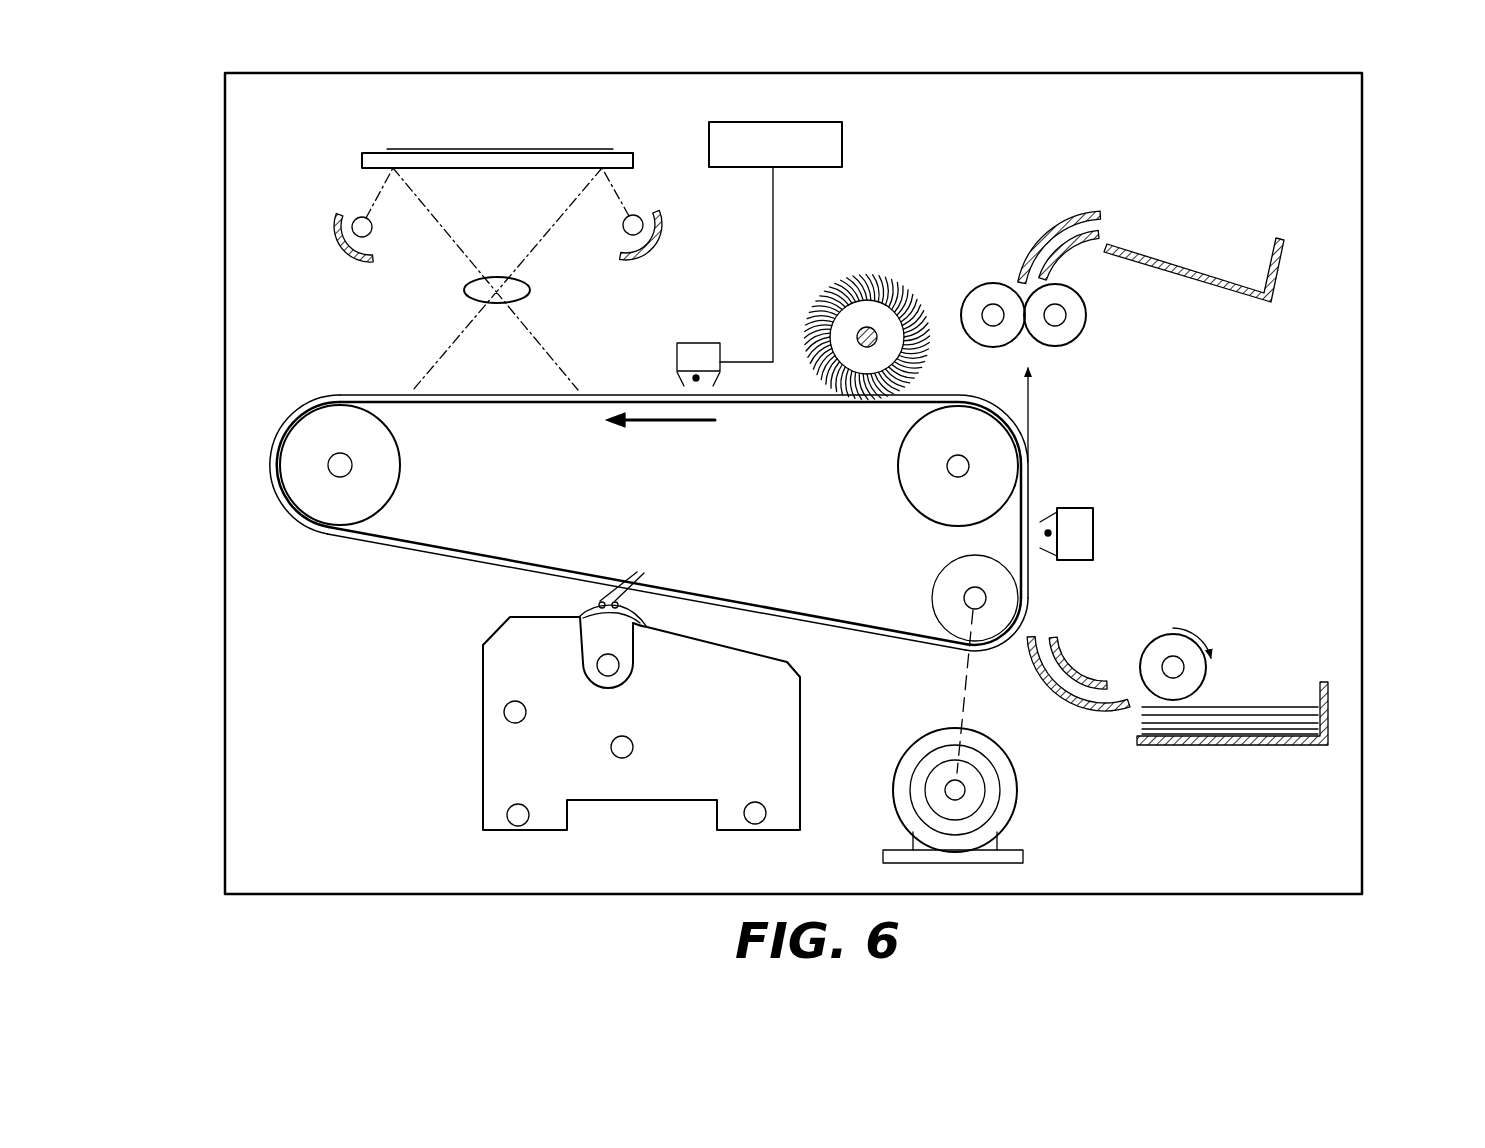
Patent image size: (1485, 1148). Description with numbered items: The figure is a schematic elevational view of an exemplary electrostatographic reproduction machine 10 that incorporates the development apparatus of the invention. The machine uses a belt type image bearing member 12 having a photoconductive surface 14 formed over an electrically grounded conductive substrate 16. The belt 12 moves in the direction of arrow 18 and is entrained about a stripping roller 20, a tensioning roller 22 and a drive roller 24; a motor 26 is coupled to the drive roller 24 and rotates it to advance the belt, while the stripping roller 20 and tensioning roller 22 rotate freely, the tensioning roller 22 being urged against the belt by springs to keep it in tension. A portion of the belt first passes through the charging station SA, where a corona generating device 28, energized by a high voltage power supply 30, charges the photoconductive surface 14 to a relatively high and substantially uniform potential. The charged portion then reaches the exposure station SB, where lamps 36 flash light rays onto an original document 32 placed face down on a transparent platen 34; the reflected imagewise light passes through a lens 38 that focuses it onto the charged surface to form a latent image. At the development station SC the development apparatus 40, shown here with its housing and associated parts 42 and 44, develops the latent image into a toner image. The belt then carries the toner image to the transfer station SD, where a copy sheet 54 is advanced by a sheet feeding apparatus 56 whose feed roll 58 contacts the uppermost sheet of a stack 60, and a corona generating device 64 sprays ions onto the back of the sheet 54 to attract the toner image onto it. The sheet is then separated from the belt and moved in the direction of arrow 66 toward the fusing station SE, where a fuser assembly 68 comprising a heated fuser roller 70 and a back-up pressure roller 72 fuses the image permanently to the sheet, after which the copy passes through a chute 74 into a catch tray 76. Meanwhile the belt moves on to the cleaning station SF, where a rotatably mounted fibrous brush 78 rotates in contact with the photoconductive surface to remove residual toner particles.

The electrostatographic reproduction machine 10 is at (1368, 486).
The belt type image bearing member 12 is at (832, 420).
The photoconductive surface 14 is at (890, 637).
The electrically grounded conductive substrate 16 is at (562, 566).
The arrow 18 is at (697, 428).
The stripping roller 20 is at (923, 486).
The tensioning roller 22 is at (385, 465).
The drive roller 24 is at (952, 596).
The motor 26 is at (1040, 790).
The corona generating device 28 is at (706, 334).
The high voltage power supply 30 is at (813, 123).
The original document 32 is at (548, 151).
The transparent platen 34 is at (503, 170).
The lamps 36 is at (362, 217).
The lens 38 is at (510, 283).
The development apparatus 40 is at (476, 767).
The developer unit opening 42 is at (603, 617).
The developer blade / wire 44 is at (640, 572).
The copy sheet 54 is at (1031, 491).
The sheet feeding apparatus 56 is at (1115, 671).
The feed roll 58 is at (1185, 647).
The stack 60 is at (1240, 749).
The corona generating device 64 is at (1095, 536).
The arrow 66 is at (1031, 433).
The fuser assembly 68 is at (1047, 340).
The heated fuser roller 70 is at (981, 328).
The back-up pressure roller 72 is at (1074, 314).
The chute 74 is at (1050, 222).
The catch tray 76 is at (1193, 265).
The fibrous brush 78 is at (850, 301).
The charging station SA is at (872, 131).
The exposure station SB is at (582, 352).
The development station SC is at (464, 700).
The transfer station SD is at (1105, 481).
The fusing station SE is at (995, 271).
The cleaning station SF is at (925, 257).